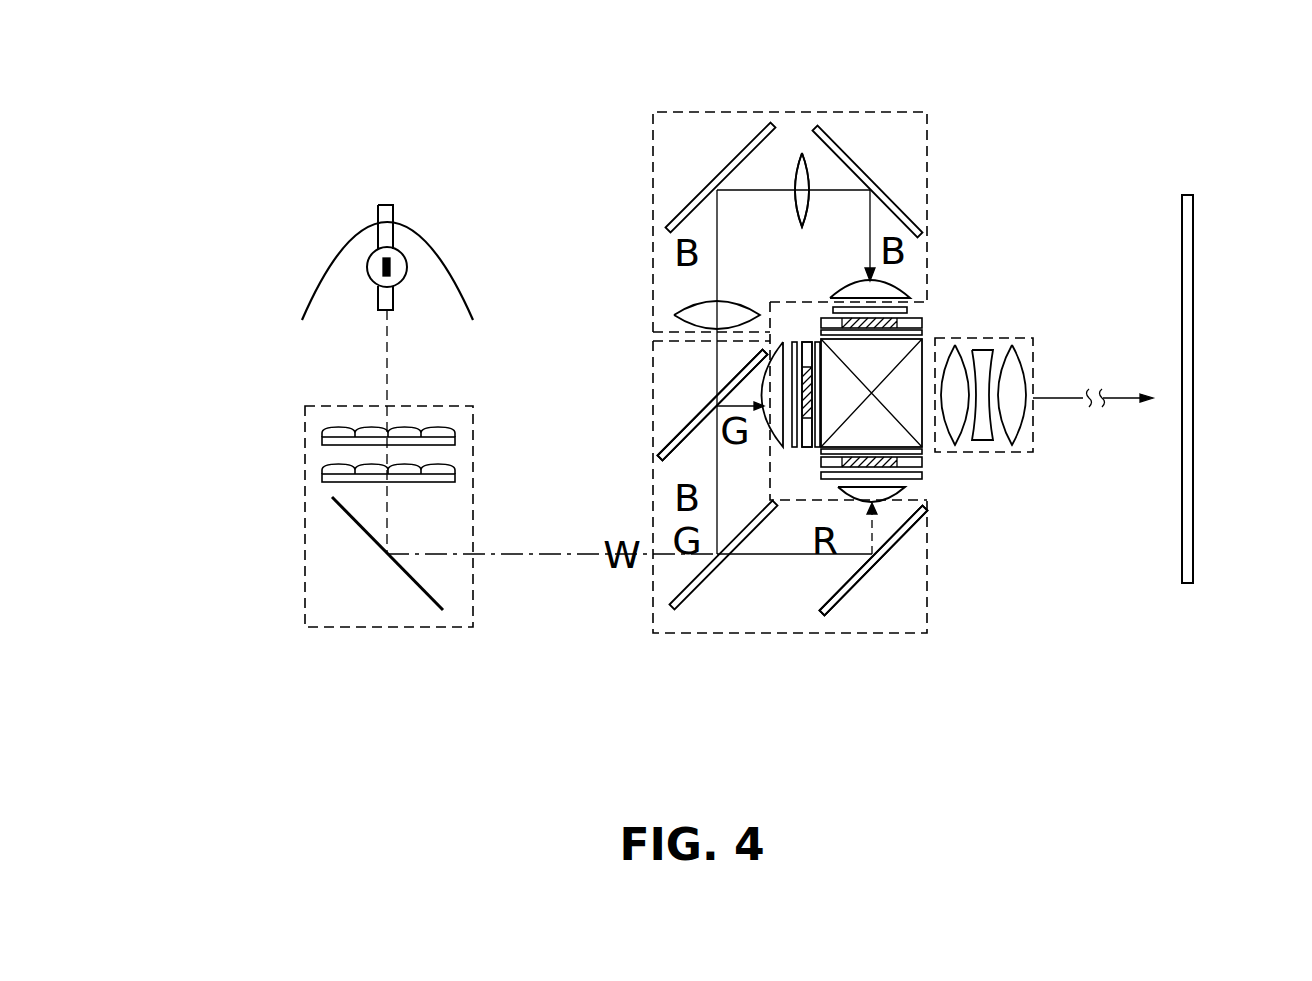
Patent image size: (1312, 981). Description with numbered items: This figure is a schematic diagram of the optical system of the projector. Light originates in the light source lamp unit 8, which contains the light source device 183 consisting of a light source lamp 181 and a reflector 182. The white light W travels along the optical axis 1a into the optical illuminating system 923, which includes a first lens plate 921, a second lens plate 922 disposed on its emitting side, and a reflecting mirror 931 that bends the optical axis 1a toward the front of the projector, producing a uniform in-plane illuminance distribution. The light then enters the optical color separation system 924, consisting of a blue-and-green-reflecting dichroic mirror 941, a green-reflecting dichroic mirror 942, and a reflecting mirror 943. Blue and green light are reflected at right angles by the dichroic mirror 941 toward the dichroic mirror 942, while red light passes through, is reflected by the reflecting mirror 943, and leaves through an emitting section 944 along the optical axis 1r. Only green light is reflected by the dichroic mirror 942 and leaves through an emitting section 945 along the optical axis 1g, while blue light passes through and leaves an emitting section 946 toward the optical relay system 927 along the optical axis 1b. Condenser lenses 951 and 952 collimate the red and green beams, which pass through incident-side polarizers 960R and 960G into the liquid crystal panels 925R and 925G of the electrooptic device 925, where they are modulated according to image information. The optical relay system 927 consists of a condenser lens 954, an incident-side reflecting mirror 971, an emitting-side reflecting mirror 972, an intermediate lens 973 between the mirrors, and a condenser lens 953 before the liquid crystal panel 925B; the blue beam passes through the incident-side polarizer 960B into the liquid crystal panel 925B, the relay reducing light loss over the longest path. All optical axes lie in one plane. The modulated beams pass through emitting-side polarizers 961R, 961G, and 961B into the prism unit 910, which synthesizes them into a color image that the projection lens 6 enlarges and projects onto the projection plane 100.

The light source lamp unit 8 is at (325, 258).
The light source lamp 181 is at (368, 256).
The reflector 182 is at (419, 227).
The light source device 183 is at (396, 197).
The optical axis 1a is at (385, 390).
The first lens plate 921 is at (322, 436).
The second lens plate 922 is at (322, 476).
The optical illuminating system 923 is at (300, 603).
The reflecting mirror 931 is at (412, 582).
The optical relay system 927 is at (681, 110).
The incident-side reflecting mirror 971 is at (695, 195).
The emitting-side reflecting mirror 972 is at (850, 155).
The intermediate lens 973 is at (798, 152).
The optical axis 1b is at (780, 188).
The condenser lens 952 is at (775, 332).
The condenser lens 954 is at (695, 305).
The emitting section 946 is at (700, 344).
The green-reflecting dichroic mirror 942 is at (665, 425).
The blue-and-green-reflecting dichroic mirror 941 is at (685, 605).
The reflecting mirror 943 is at (835, 608).
The emitting section 944 is at (892, 500).
The emitting section 945 is at (763, 420).
The optical axis 1g is at (745, 400).
The optical axis 1r is at (820, 565).
The incident-side polarizer 960G is at (793, 345).
The liquid crystal panel 925G is at (803, 340).
The emitting-side polarizer 961G is at (788, 455).
The prism unit 910 is at (922, 337).
The incident-side polarizer 960B is at (908, 305).
The liquid crystal panel 925B is at (921, 318).
The emitting-side polarizer 961B is at (922, 333).
The condenser lens 953 is at (893, 281).
The incident-side polarizer 960R is at (922, 476).
The liquid crystal panel 925R is at (922, 462).
The emitting-side polarizer 961R is at (922, 452).
The condenser lens 951 is at (915, 495).
The electrooptic device 925 is at (814, 480).
The optical color separation system 924 is at (943, 620).
The projection lens 6 is at (1040, 338).
The projection plane 100 is at (1193, 268).